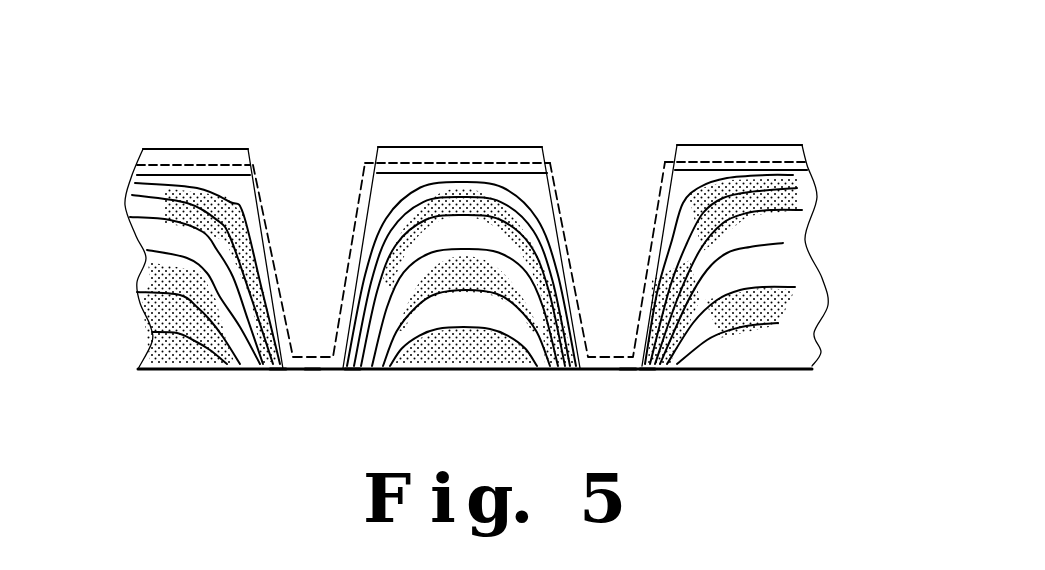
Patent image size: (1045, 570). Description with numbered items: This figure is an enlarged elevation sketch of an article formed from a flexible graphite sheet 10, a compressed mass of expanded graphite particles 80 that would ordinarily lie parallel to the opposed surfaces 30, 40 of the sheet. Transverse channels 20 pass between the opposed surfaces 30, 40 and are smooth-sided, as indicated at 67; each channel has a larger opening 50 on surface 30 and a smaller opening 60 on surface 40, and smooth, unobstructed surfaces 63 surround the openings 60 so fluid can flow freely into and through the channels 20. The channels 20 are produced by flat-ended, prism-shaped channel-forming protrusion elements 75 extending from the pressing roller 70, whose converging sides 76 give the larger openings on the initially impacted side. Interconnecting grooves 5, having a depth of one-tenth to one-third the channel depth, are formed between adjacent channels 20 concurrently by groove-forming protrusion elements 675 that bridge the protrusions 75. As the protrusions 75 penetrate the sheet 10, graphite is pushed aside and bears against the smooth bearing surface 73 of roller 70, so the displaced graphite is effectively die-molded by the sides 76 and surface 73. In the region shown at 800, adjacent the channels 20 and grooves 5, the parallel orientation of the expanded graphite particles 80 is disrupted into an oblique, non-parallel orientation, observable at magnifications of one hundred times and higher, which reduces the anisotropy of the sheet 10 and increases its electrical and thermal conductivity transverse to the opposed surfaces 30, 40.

The grooves 5 is at (157, 160).
The flexible graphite sheet 10 is at (177, 114).
The channels 20 is at (318, 160).
The opposed surface 30 is at (490, 170).
The opposed surface 40 is at (480, 368).
The openings 50 is at (353, 172).
The openings 60 is at (313, 370).
The smooth, unobstructed surfaces 63 is at (278, 370).
The smooth-sided channel walls 67 is at (348, 293).
The pressing roller 70 is at (271, 160).
The smooth bearing surface 73 is at (227, 148).
The channel-forming protrusion elements 75 is at (298, 240).
The converging sides of protrusion elements 76 is at (323, 369).
The expanded graphite particles 80 is at (180, 212).
The groove-forming protrusion elements 675 is at (233, 157).
The region of disrupted particle orientation 800 is at (243, 213).